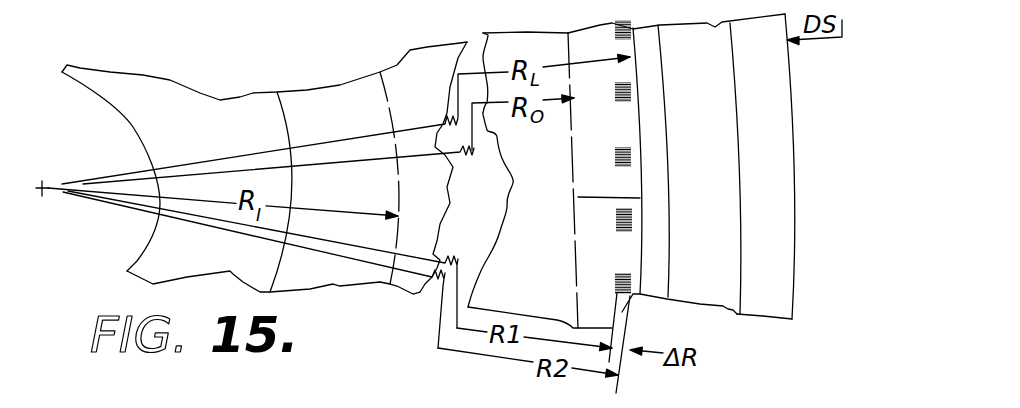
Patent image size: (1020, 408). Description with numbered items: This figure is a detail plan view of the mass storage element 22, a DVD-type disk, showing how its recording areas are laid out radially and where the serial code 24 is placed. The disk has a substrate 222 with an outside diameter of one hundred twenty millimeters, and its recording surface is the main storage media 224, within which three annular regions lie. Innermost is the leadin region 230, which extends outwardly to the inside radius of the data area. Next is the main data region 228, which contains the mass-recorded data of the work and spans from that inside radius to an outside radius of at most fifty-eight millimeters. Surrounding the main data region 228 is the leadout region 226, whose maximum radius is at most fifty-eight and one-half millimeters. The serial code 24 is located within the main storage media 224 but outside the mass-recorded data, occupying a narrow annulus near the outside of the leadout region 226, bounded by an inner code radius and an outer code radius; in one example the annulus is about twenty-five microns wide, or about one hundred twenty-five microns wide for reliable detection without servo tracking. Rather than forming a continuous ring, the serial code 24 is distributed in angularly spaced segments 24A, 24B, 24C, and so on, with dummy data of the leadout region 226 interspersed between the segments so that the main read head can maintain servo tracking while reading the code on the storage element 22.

The storage element 22 is at (383, 304).
The serial code 24 is at (633, 38).
The serial code segment 24A is at (633, 284).
The serial code segment 24B is at (635, 217).
The serial code segment 24C is at (633, 158).
The substrate 222 is at (793, 311).
The main storage media 224 is at (280, 117).
The leadout region 226 is at (605, 197).
The main data region 228 is at (576, 210).
The leadin region 230 is at (385, 198).